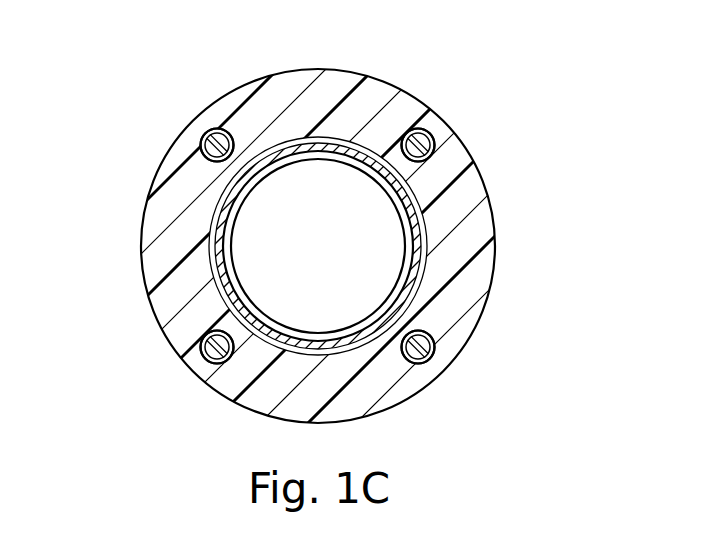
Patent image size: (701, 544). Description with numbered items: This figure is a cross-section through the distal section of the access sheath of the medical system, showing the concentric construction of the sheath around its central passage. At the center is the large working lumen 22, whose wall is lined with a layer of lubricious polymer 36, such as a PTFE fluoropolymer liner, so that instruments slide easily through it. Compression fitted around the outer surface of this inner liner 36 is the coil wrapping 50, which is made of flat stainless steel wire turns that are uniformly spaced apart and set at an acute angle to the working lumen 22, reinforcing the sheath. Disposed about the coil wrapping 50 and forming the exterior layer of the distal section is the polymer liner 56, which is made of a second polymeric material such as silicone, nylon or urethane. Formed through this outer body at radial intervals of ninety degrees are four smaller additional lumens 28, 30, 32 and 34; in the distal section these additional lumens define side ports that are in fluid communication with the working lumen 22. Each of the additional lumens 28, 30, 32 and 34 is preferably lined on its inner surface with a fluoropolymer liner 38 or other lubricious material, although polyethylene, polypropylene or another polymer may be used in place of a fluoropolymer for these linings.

The working lumen 22 is at (362, 246).
The additional lumen 28 is at (201, 143).
The additional lumen 30 is at (432, 125).
The additional lumen 32 is at (434, 343).
The additional lumen 34 is at (200, 344).
The lubricious polymer layer 36 is at (412, 230).
The fluoropolymer liner 38 is at (207, 134).
The coil wrapping 50 is at (350, 345).
The polymer liner 56 is at (333, 88).